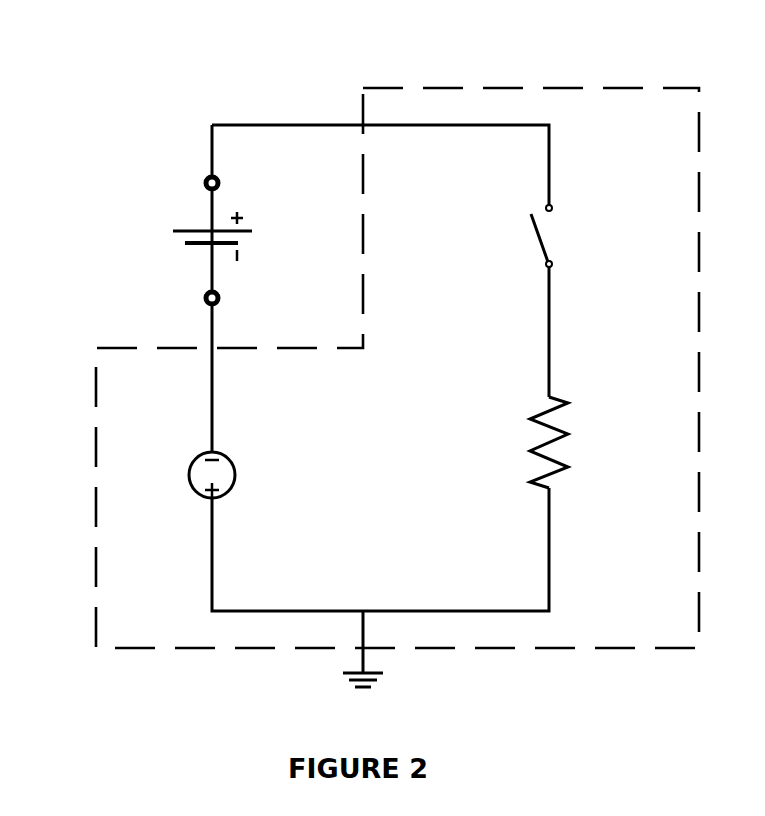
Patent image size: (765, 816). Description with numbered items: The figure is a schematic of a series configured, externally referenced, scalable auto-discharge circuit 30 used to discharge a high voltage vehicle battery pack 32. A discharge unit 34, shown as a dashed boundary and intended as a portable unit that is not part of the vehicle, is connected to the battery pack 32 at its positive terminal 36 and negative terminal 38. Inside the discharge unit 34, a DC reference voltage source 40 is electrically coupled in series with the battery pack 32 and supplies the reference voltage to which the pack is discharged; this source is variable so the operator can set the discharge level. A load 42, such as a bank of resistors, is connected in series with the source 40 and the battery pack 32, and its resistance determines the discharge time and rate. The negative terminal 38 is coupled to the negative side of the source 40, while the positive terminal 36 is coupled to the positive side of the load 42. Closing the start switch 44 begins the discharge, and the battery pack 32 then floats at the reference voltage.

The auto-discharge circuit 30 is at (137, 86).
The high voltage vehicle battery pack 32 is at (173, 231).
The discharge unit 34 is at (527, 87).
The positive terminal 36 is at (204, 183).
The negative terminal 38 is at (204, 301).
The DC reference voltage source 40 is at (190, 480).
The load 42 is at (563, 433).
The start switch 44 is at (540, 234).